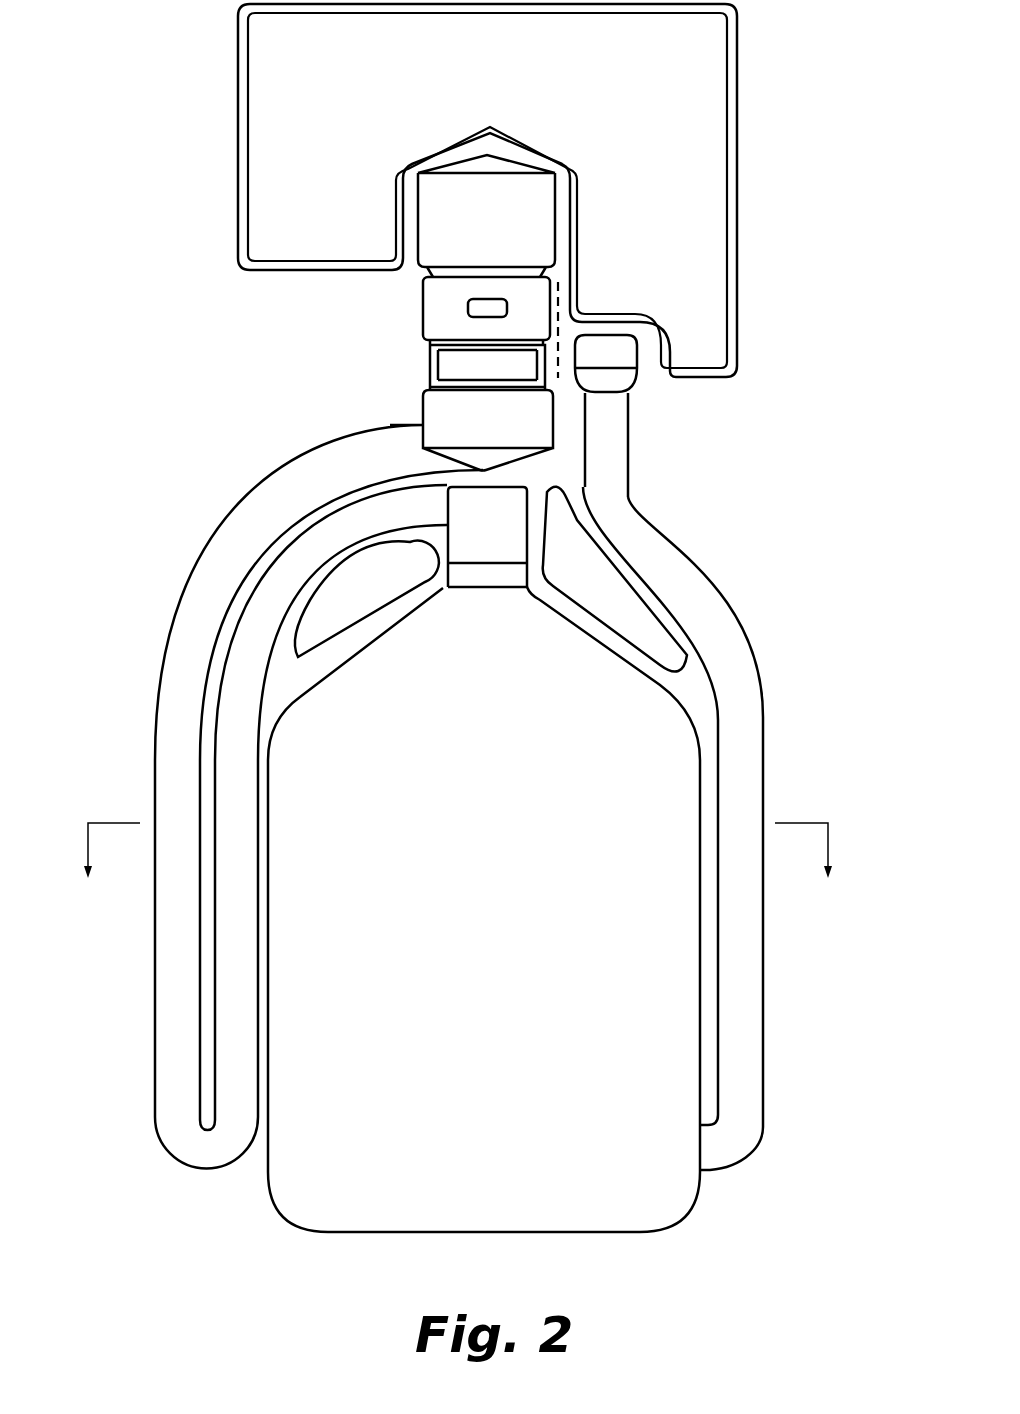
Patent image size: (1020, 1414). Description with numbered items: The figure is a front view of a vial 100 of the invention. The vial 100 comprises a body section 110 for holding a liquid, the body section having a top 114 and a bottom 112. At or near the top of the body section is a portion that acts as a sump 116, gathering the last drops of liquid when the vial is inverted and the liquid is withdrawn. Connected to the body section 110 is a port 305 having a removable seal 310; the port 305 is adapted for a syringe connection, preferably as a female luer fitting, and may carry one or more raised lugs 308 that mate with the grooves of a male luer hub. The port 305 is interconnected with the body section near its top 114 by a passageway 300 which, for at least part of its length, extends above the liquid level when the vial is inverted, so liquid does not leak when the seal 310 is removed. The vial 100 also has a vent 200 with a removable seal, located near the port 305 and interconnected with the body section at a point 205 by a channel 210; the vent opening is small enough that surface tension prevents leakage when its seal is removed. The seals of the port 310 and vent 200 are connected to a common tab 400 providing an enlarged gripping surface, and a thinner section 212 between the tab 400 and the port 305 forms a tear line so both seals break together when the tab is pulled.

The vial 100 is at (140, 455).
The body section 110 is at (449, 974).
The bottom 112 is at (588, 1184).
The top 114 is at (492, 633).
The sump 116 is at (495, 511).
The vent 200 is at (562, 377).
The point on the body section 205 is at (744, 1160).
The channel 210 is at (757, 643).
The thinner section 212 is at (575, 329).
The passageway 300 is at (154, 709).
The port 305 is at (422, 322).
The raised lugs 308 is at (510, 307).
The removable seal 310 is at (418, 273).
The tab 400 is at (737, 208).